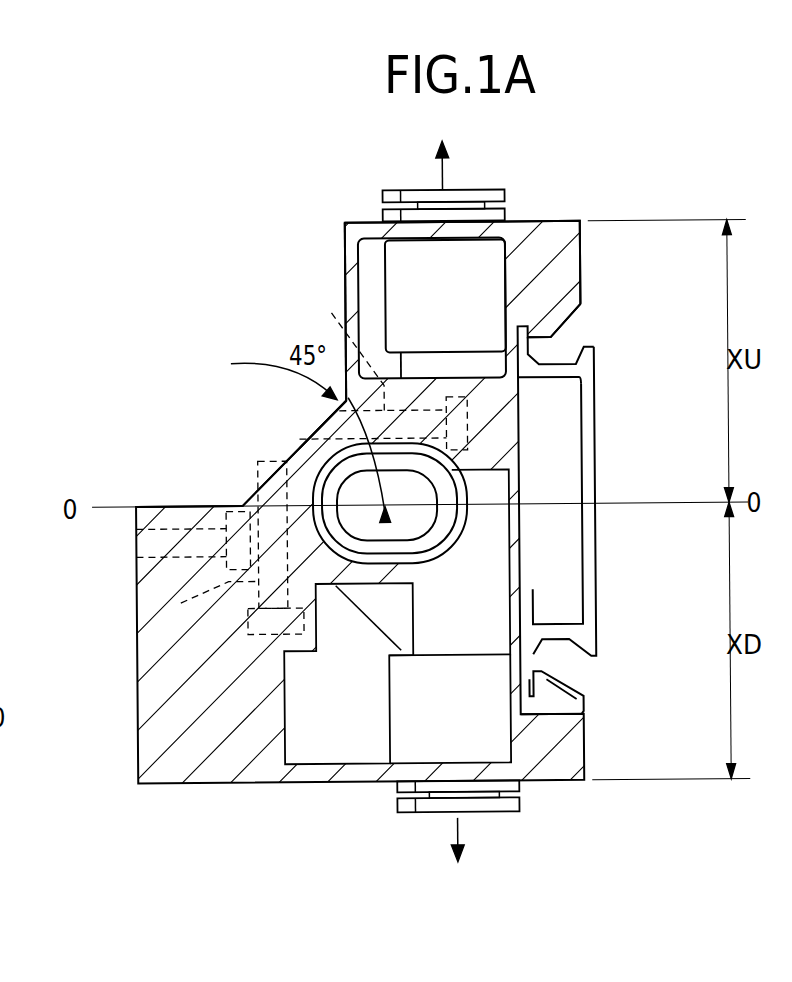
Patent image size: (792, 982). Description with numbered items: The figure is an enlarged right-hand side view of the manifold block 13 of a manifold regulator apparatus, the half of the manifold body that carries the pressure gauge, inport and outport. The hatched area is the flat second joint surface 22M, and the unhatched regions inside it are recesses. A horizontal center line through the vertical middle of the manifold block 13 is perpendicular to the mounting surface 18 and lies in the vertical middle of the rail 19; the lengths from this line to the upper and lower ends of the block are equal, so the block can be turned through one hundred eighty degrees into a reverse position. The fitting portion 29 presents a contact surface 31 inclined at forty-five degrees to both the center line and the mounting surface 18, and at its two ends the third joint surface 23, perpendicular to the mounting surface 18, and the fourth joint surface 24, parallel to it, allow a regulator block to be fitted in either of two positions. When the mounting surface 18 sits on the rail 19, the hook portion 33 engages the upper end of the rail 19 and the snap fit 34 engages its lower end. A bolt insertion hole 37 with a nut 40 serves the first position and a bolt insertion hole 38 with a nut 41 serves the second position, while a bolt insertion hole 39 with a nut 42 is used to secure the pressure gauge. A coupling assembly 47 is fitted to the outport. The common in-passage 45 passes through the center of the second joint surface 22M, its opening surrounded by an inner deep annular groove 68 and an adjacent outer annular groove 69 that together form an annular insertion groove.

The manifold block 13 is at (147, 790).
The mounting surface 18 is at (592, 484).
The rail 19 is at (592, 364).
The second joint surface 22M is at (540, 224).
The third joint surface 23 is at (152, 505).
The fourth joint surface 24 is at (347, 243).
The fitting portion 29 is at (255, 496).
The contact surface 31 is at (300, 446).
The hook portion 33 is at (553, 331).
The snap fit 34 is at (577, 686).
The bolt insertion hole 37 is at (348, 347).
The bolt insertion hole 38 is at (180, 601).
The bolt insertion hole 39 is at (148, 563).
The nut 40 is at (468, 411).
The nut 41 is at (258, 640).
The nut 42 is at (218, 506).
The common in-passage 45 is at (399, 483).
The coupling assembly 47 is at (398, 195).
The annular groove 68 is at (418, 533).
The annular groove 69 is at (385, 518).